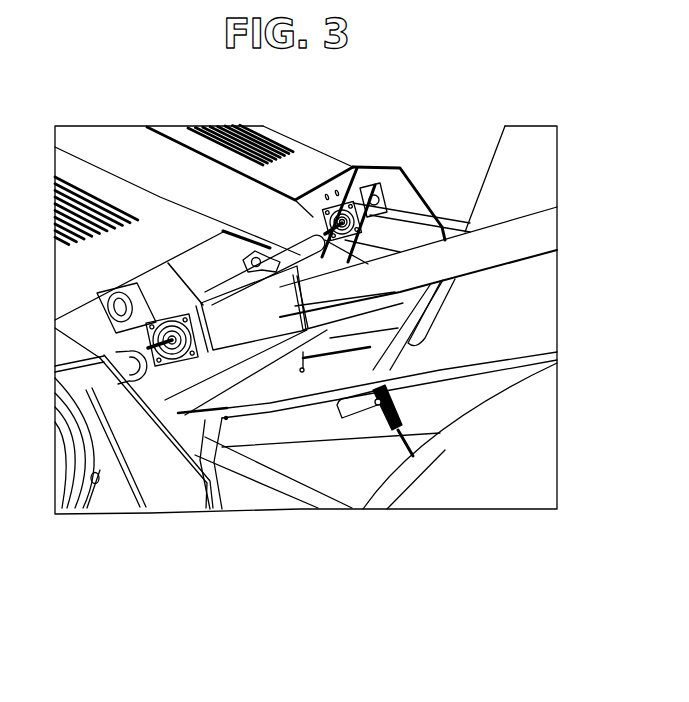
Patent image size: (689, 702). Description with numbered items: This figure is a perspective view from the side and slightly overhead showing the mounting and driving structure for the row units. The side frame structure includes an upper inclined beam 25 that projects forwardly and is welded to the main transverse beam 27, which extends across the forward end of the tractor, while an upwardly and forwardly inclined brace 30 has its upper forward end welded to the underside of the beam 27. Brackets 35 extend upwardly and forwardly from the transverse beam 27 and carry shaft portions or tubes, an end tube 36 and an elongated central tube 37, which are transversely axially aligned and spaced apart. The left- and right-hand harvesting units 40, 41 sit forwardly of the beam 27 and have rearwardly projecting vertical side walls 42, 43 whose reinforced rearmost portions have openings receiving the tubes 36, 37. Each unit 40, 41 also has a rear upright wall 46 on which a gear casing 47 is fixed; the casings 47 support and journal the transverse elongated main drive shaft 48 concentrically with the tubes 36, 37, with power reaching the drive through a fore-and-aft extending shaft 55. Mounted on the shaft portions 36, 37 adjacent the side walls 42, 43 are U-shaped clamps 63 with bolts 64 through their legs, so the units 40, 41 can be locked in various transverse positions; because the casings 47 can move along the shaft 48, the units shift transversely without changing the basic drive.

The upper inclined beam 25 is at (448, 230).
The main transverse beam 27 is at (265, 385).
The upwardly and forwardly inclined brace 30 is at (301, 486).
The brackets 35 is at (227, 419).
The end shaft portion or tube 36 is at (112, 335).
The elongated central shaft portion or tube 37 is at (300, 226).
The left-hand harvesting unit 40 is at (63, 273).
The right-hand harvesting unit 41 is at (277, 132).
The rearwardly projecting vertical side wall 42 is at (302, 220).
The rearwardly projecting vertical side wall 43 is at (231, 247).
The rear upright wall 46 is at (338, 182).
The gear casing 47 is at (165, 316).
The main drive shaft 48 is at (193, 347).
The fore-and-aft extending shaft 55 is at (499, 232).
The U-shaped clamp 63 is at (205, 253).
The bolt 64 is at (259, 272).